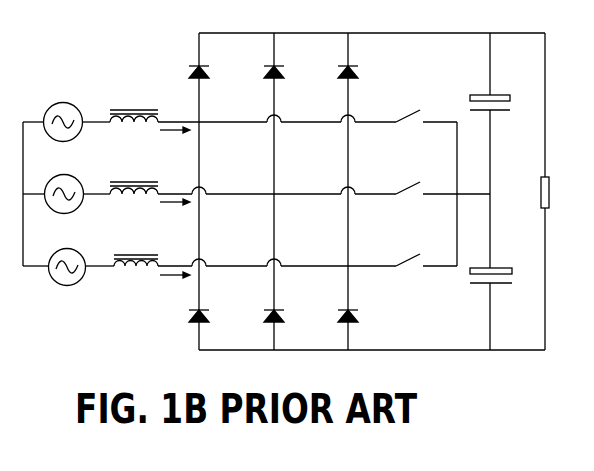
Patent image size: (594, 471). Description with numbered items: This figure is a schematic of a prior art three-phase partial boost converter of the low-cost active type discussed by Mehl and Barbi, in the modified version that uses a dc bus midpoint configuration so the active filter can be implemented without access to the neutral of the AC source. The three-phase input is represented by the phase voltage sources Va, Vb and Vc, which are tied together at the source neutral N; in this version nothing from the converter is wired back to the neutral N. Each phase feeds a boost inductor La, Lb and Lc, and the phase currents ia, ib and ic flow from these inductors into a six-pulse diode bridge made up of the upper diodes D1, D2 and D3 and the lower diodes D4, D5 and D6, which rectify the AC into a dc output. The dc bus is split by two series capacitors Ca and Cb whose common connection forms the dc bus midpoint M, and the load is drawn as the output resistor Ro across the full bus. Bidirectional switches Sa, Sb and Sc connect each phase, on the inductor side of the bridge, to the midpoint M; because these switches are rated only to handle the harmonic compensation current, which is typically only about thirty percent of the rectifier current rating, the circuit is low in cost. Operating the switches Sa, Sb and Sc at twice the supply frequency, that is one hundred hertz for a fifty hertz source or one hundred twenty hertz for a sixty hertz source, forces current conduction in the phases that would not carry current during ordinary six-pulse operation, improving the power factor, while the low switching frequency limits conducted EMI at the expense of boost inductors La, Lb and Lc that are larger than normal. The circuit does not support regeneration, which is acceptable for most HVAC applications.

The neutral node N is at (13, 194).
The phase a voltage source Va is at (53, 107).
The phase b voltage source Vb is at (53, 183).
The phase c voltage source Vc is at (54, 254).
The phase a inductor La is at (120, 102).
The phase b inductor Lb is at (121, 175).
The phase c inductor Lc is at (122, 247).
The phase a current ia is at (175, 140).
The phase b current ib is at (175, 212).
The phase c current ic is at (175, 285).
The diode D1 is at (214, 80).
The diode D2 is at (291, 80).
The diode D3 is at (365, 80).
The diode D4 is at (217, 323).
The diode D5 is at (293, 323).
The diode D6 is at (367, 323).
The phase a switch Sa is at (426, 133).
The phase b switch Sb is at (443, 205).
The phase c switch Sc is at (426, 277).
The upper DC-link capacitor Ca is at (481, 88).
The lower DC-link capacitor Cb is at (482, 284).
The DC-link midpoint M is at (507, 194).
The load resistor Ro is at (560, 194).